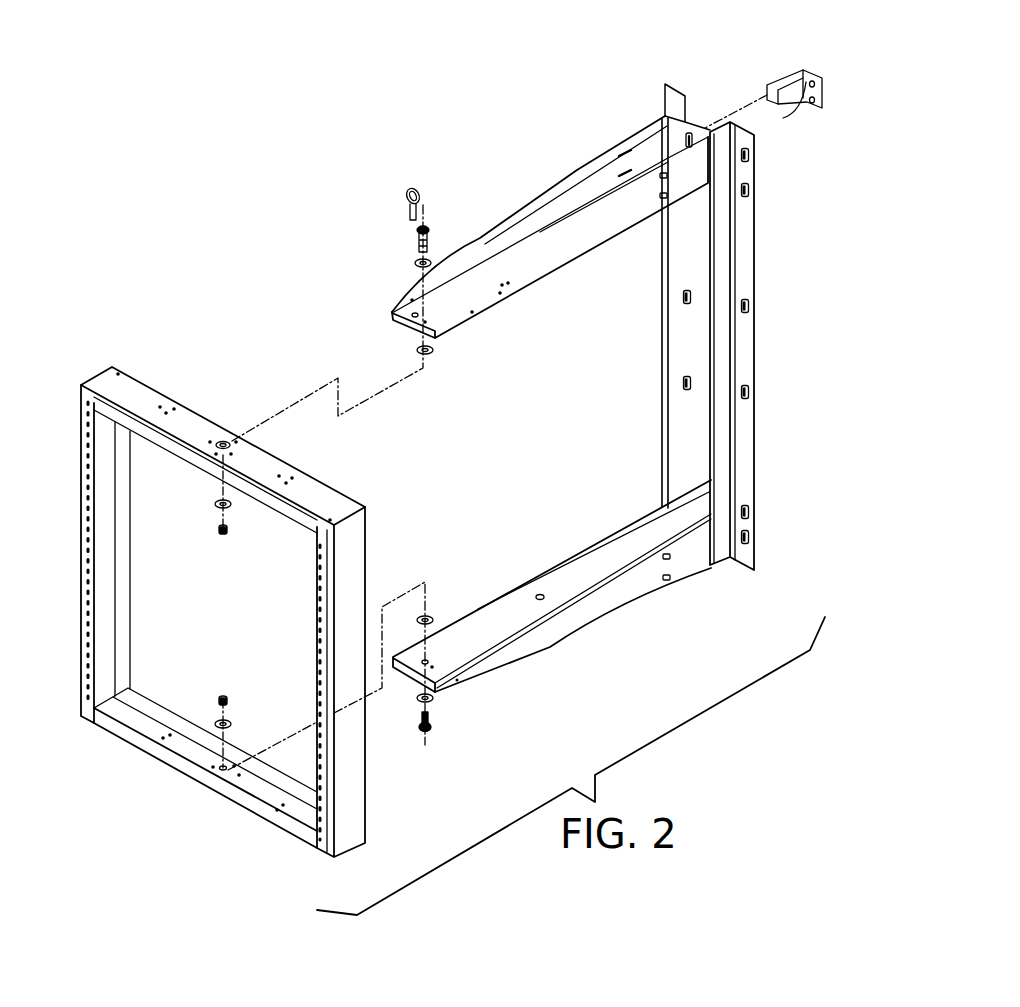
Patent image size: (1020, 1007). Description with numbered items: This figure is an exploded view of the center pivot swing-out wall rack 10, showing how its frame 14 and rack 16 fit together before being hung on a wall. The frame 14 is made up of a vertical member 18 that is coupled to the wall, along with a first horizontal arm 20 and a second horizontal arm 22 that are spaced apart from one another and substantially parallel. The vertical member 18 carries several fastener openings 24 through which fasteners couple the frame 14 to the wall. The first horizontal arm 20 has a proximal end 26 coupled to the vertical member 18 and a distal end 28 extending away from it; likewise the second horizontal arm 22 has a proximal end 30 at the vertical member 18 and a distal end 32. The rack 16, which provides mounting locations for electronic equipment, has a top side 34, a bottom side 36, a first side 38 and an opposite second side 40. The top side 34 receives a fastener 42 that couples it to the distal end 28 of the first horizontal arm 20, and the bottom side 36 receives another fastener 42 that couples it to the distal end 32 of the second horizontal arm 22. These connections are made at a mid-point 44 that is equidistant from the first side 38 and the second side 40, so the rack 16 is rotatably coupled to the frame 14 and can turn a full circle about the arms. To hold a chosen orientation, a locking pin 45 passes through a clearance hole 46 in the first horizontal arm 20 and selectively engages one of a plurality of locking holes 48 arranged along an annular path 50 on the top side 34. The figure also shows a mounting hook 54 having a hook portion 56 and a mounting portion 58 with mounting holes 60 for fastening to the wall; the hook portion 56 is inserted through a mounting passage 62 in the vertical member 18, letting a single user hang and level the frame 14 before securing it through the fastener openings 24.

The swing-out wall rack 10 is at (181, 254).
The frame 14 is at (790, 385).
The rack 16 is at (63, 684).
The vertical member 18 is at (690, 433).
The first horizontal arm 20 is at (513, 258).
The second horizontal arm 22 is at (593, 558).
The fastener openings 24 is at (750, 160).
The proximal end 26 is at (657, 155).
The distal end 28 is at (447, 307).
The proximal end 30 is at (658, 523).
The distal end 32 is at (474, 625).
The top side 34 is at (306, 481).
The bottom side 36 is at (140, 719).
The first side 38 is at (80, 500).
The second side 40 is at (356, 562).
The fastener 42 is at (428, 232).
The mid-point 44 is at (233, 424).
The locking pin 45 is at (406, 195).
The clearance hole 46 is at (405, 322).
The locking holes 48 is at (216, 440).
The annular path 50 is at (240, 456).
The mounting hook 54 is at (811, 60).
The hook portion 56 is at (770, 88).
The mounting portion 58 is at (818, 110).
The mounting holes 60 is at (787, 114).
The mounting passage 62 is at (690, 137).